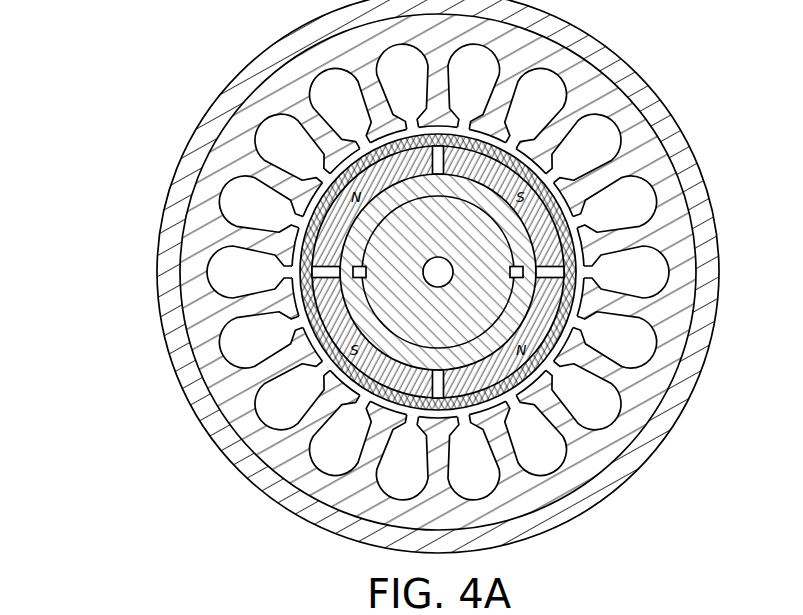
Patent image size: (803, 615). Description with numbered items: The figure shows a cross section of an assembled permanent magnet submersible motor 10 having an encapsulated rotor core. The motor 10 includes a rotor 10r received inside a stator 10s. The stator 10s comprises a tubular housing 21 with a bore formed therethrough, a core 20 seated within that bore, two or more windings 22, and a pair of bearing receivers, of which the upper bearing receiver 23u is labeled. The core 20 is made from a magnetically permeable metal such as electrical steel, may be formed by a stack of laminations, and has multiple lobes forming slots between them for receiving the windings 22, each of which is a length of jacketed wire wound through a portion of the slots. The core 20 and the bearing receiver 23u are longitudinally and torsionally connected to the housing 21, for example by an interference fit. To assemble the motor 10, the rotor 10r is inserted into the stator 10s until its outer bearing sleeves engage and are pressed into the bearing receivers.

The housing 21 is at (156, 272).
The core 20 is at (212, 313).
The permanent magnet submersible motor 10 is at (47, 504).
The stator 10s is at (217, 505).
The rotor 10r is at (568, 614).
The bearing receiver 23u is at (273, 614).
The winding 22 is at (647, 600).